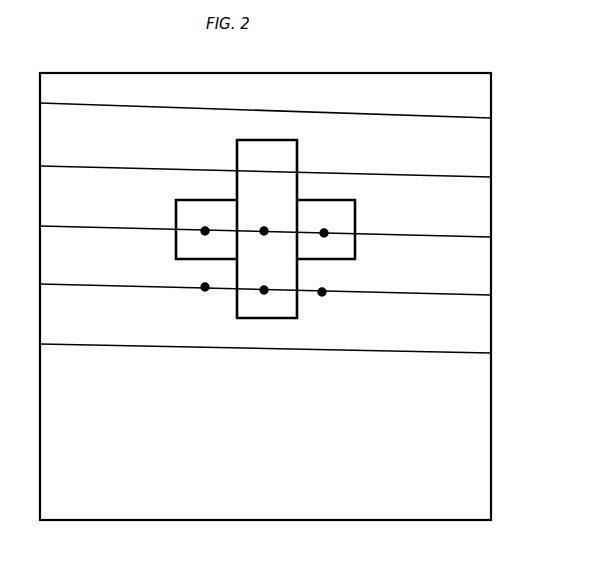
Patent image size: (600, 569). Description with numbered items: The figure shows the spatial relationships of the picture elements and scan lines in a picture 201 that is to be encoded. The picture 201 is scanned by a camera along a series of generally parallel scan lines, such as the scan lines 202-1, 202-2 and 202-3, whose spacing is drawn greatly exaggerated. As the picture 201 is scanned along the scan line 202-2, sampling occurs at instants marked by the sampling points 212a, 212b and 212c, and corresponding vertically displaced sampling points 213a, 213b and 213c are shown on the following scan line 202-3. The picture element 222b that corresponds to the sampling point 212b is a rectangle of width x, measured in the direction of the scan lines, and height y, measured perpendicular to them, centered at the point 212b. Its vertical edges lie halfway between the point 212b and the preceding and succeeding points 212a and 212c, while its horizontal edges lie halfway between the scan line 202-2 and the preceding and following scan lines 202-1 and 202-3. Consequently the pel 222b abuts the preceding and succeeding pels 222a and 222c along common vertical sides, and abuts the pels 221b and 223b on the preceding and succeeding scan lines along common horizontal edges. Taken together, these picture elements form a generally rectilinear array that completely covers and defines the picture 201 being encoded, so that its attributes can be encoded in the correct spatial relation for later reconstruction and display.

The picture 201 is at (491, 433).
The scan line 202-1 is at (456, 176).
The scan line 202-2 is at (456, 236).
The scan line 202-3 is at (458, 294).
The picture element 221b is at (258, 140).
The picture element 222a is at (205, 199).
The picture element 222b is at (297, 188).
The picture element 222c is at (355, 214).
The picture element 223b is at (271, 318).
The sampling point 212a is at (205, 231).
The sampling point 212b is at (264, 231).
The sampling point 212c is at (324, 233).
The sampling point 213a is at (205, 287).
The sampling point 213b is at (264, 290).
The sampling point 213c is at (322, 292).